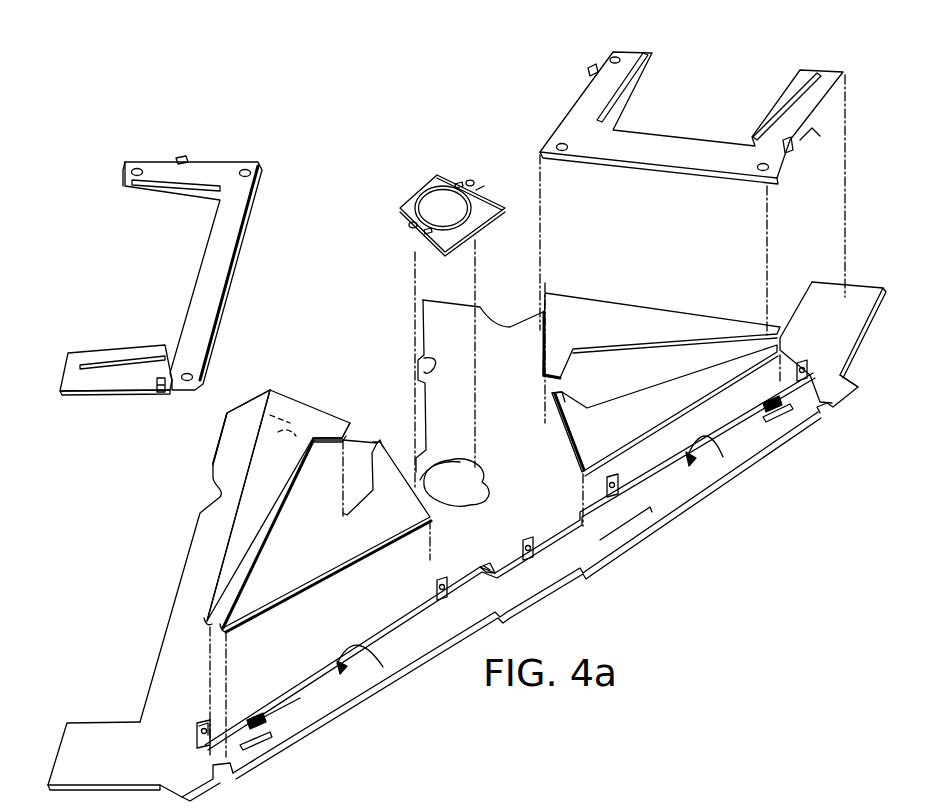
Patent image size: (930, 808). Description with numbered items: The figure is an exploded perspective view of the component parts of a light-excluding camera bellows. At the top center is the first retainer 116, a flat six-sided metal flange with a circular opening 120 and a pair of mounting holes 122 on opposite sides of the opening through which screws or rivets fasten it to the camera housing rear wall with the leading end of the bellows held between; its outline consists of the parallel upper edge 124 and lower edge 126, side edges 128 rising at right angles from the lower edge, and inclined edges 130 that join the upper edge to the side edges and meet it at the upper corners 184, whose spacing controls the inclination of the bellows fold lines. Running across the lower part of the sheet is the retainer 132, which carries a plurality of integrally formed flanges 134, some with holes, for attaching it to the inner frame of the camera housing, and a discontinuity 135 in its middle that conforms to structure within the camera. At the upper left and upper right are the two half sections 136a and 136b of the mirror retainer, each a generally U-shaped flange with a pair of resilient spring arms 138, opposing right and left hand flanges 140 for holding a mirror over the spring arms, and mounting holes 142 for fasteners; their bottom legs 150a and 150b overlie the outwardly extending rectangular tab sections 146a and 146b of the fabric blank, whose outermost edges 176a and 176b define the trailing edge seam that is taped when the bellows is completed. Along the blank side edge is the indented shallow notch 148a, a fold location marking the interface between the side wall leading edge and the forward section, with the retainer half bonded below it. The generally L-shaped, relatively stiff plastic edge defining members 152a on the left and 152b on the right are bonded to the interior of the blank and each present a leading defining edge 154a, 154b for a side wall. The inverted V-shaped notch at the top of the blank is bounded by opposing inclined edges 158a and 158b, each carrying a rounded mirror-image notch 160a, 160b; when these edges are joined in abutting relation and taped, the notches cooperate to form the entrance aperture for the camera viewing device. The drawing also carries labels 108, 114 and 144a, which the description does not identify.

The rail 108 is at (576, 584).
The wire loop 114 is at (446, 476).
The first retainer 116 is at (488, 214).
The circular opening 120 is at (444, 198).
The mounting holes 122 is at (478, 186).
The upper edge 124 is at (421, 182).
The lower edge 126 is at (480, 238).
The side edges 128 is at (490, 200).
The inclined edges 130 is at (471, 180).
The retainer 132 is at (508, 565).
The flanges 134 is at (203, 720).
The discontinuity 135 is at (482, 566).
The half section 136a is at (234, 155).
The half section 136b is at (560, 106).
The spring arms 138 is at (150, 190).
The right and left hand flanges 140 is at (180, 160).
The mounting holes 142 is at (137, 168).
The panel portion 144a is at (226, 426).
The tab section 146a is at (92, 730).
The tab section 146b is at (810, 304).
The indented shallow notch 148a is at (218, 492).
The bottom leg 150a is at (118, 386).
The bottom leg 150b is at (810, 138).
The left hand edge defining member 152a is at (286, 402).
The right hand edge defining member 152b is at (610, 320).
The leading defining edge 154a is at (334, 428).
The leading defining edge 154b is at (543, 372).
The inclined edge 158a is at (260, 408).
The inclined edge 158b is at (420, 312).
The rounded notch 160a is at (282, 438).
The rounded notch 160b is at (432, 366).
The outermost edge 176a is at (54, 760).
The outermost edge 176b is at (862, 296).
The upper corners 184 is at (441, 170).